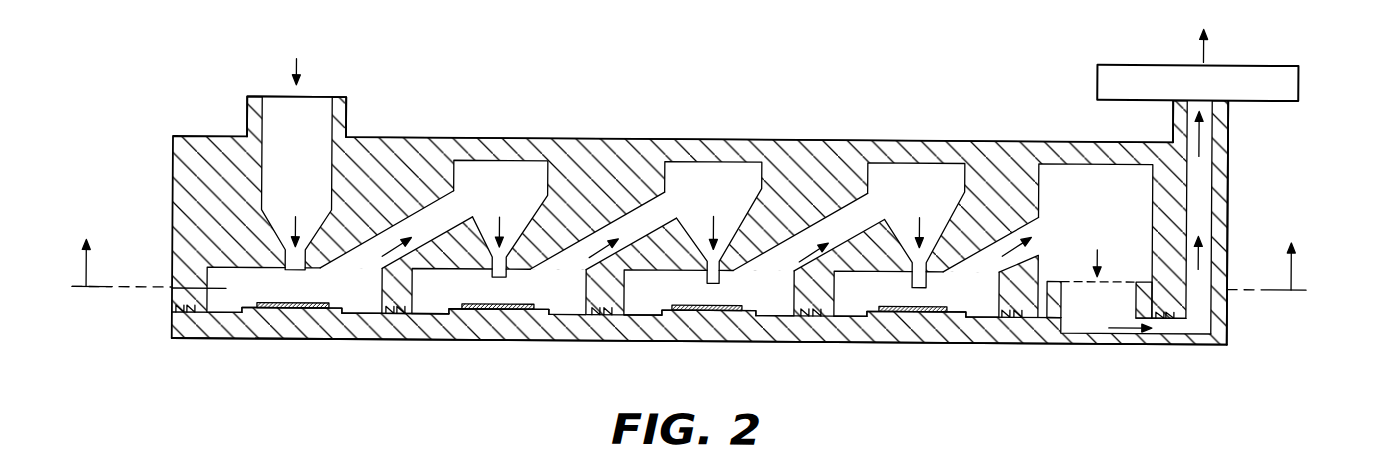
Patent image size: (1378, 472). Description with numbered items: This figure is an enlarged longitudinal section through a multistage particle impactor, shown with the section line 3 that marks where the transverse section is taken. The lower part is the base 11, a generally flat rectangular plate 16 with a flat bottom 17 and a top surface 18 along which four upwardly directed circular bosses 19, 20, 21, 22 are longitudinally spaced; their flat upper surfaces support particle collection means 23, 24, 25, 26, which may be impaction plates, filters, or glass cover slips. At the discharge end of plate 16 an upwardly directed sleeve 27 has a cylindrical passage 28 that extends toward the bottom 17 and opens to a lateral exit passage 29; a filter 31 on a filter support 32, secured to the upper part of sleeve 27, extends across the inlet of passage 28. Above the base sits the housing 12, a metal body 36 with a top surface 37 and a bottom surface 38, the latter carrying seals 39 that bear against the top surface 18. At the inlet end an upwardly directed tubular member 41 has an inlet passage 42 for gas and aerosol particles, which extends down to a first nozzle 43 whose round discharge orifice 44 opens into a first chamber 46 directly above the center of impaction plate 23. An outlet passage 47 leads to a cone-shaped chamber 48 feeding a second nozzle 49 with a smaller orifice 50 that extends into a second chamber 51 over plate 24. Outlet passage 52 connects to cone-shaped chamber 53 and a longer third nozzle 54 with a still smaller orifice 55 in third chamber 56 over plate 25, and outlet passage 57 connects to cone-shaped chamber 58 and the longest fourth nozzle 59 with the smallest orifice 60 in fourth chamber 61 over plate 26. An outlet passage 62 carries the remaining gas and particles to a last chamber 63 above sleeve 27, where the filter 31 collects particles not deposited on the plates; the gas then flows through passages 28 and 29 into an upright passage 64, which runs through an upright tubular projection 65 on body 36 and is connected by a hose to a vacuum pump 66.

The section line 3- 3 is at (686, 287).
The base 11 is at (235, 338).
The housing 12 is at (597, 136).
The plate 16 is at (403, 313).
The flat bottom 17 is at (443, 322).
The top surface 18 is at (372, 310).
The circular boss 19 is at (272, 308).
The circular boss 20 is at (481, 307).
The circular boss 21 is at (697, 308).
The circular boss 22 is at (893, 313).
The particle collection means 23 is at (318, 308).
The particle collection means 24 is at (531, 305).
The particle collection means 25 is at (729, 308).
The particle collection means 26 is at (937, 310).
The sleeve 27 is at (1050, 274).
The cylindrical passage 28 is at (1088, 314).
The lateral exit passage 29 is at (1168, 324).
The filter 31 is at (1113, 274).
The filter support 32 is at (1108, 300).
The metal body 36 is at (813, 146).
The top surface 37 is at (453, 136).
The bottom surface 38 is at (178, 304).
The seals 39 is at (174, 336).
The tubular member 41 is at (346, 120).
The inlet passage 42 is at (272, 157).
The first nozzle 43 is at (277, 275).
The discharge orifice 44 is at (305, 270).
The first chamber 46 is at (208, 272).
The outlet passage 47 is at (420, 226).
The cone-shaped chamber 48 is at (522, 199).
The second nozzle 49 is at (490, 273).
The second discharge orifice 50 is at (507, 276).
The second chamber 51 is at (443, 310).
The outlet passage 52 is at (640, 216).
The cone-shaped chamber 53 is at (734, 200).
The third nozzle 54 is at (705, 283).
The discharge orifice 55 is at (720, 281).
The third chamber 56 is at (630, 310).
The outlet passage 57 is at (840, 212).
The cone-shaped chamber 58 is at (935, 197).
The fourth nozzle 59 is at (905, 285).
The discharge orifice 60 is at (927, 284).
The fourth chamber 61 is at (863, 310).
The outlet passage 62 is at (1030, 216).
The last chamber 63 is at (1124, 198).
The upright passage 64 is at (1200, 186).
The tubular projection 65 is at (1222, 123).
The vacuum pump 66 is at (1298, 71).